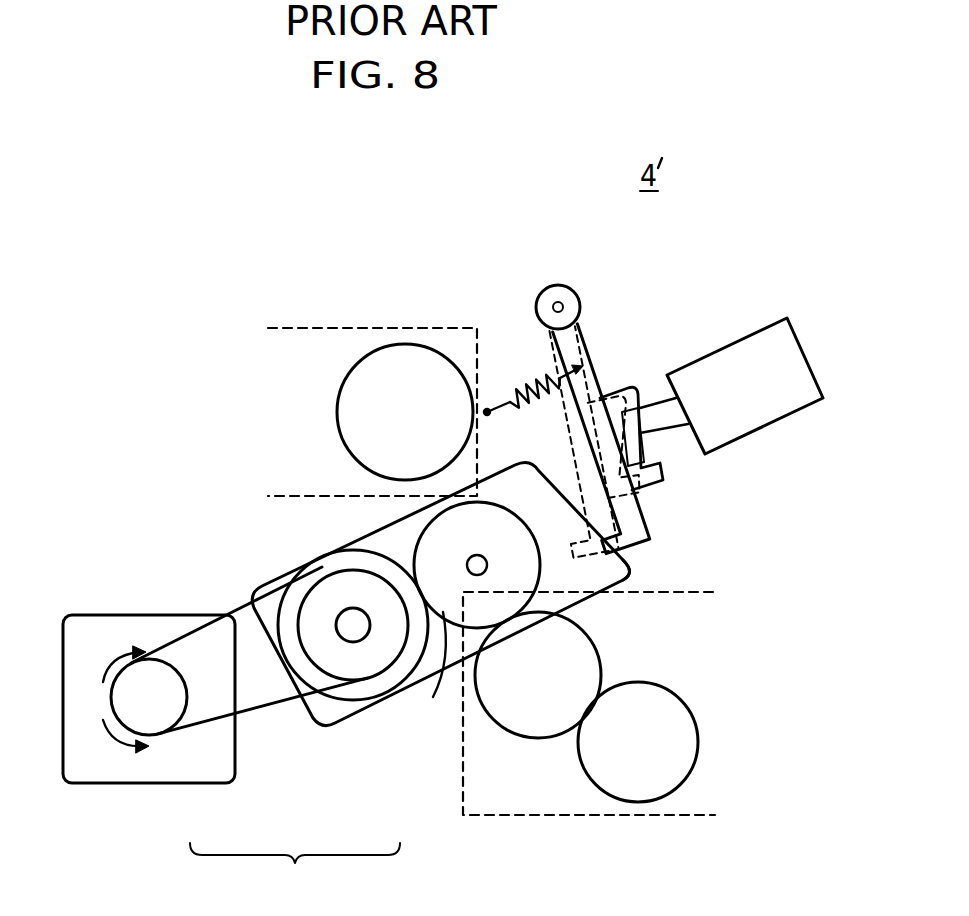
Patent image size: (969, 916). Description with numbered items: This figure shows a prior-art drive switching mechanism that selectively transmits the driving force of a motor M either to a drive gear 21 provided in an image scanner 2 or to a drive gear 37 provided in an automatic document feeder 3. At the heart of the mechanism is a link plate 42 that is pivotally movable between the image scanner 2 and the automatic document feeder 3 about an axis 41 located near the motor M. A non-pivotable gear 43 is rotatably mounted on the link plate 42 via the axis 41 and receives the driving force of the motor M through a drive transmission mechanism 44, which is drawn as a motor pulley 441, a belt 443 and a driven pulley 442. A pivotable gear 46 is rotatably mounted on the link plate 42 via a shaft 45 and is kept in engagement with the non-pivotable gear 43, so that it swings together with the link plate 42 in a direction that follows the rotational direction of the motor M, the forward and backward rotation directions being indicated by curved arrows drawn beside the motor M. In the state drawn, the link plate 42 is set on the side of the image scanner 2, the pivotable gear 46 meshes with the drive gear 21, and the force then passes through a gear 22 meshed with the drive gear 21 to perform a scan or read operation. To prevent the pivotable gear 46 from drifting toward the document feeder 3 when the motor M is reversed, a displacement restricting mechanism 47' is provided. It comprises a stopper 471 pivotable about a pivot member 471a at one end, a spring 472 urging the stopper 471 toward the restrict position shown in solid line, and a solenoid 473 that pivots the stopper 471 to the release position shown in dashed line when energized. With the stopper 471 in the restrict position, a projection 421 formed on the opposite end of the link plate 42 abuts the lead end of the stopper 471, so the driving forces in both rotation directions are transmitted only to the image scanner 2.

The image scanner 2 is at (688, 590).
The automatic document feeder 3 is at (440, 327).
The drive gear 21 is at (527, 738).
The gear 22 is at (647, 684).
The drive gear 37 is at (348, 452).
The axis 41 is at (345, 620).
The link plate 42 is at (391, 536).
The non-pivotable gear 43 is at (336, 562).
The drive transmission mechanism 44 is at (295, 871).
The shaft 45 is at (485, 560).
The pivotable gear 46 is at (428, 672).
The displacement restricting mechanism 47' is at (703, 231).
The projection 421 is at (631, 569).
The motor pulley 441 is at (150, 734).
The driven pulley 442 is at (382, 662).
The belt 443 is at (285, 703).
The stopper 471 is at (615, 400).
The pivot member 471a is at (558, 302).
The spring 472 is at (527, 386).
The solenoid 473 is at (767, 415).
The motor M is at (147, 784).